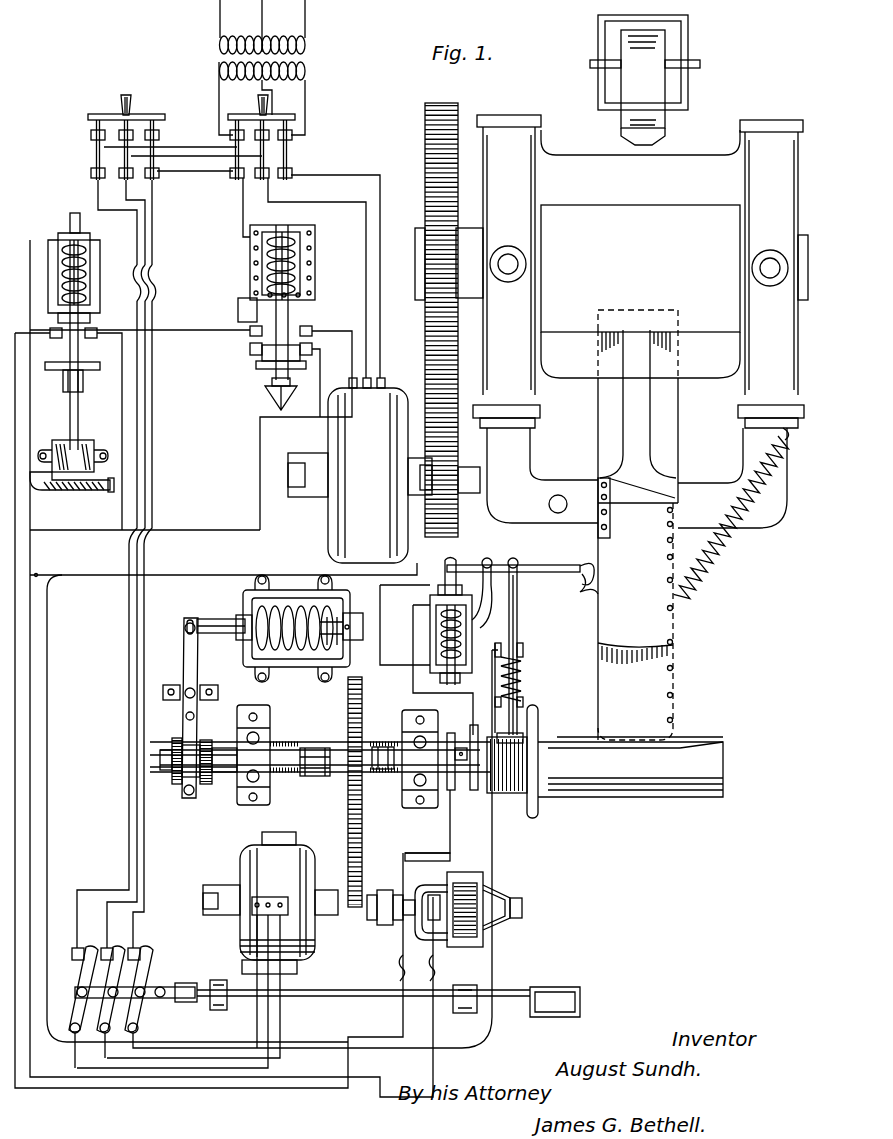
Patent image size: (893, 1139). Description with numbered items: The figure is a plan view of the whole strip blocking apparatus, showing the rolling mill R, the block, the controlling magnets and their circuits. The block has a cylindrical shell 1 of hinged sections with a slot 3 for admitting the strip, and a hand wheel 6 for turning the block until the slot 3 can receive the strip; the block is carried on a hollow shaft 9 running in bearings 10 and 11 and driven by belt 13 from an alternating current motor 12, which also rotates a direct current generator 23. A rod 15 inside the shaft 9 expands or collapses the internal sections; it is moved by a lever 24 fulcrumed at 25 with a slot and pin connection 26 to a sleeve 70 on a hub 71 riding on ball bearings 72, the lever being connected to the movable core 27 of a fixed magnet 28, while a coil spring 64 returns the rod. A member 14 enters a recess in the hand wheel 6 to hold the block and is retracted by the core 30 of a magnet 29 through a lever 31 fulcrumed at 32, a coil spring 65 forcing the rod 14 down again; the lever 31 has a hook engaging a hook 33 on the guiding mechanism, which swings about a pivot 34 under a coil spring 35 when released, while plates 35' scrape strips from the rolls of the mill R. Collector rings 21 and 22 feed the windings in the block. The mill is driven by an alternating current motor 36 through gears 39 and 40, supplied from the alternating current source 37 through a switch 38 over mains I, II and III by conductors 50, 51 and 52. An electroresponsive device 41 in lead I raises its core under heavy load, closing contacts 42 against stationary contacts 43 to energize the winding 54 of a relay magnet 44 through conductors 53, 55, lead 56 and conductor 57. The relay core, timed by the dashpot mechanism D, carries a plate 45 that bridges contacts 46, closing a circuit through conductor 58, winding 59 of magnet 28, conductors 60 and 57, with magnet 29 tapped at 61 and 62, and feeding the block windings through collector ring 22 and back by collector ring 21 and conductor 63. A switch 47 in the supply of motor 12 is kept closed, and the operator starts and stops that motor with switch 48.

The cylindrical shell 1 is at (642, 775).
The space 3 is at (690, 747).
The hand wheel 6 is at (538, 812).
The hollow shaft 9 is at (300, 748).
The bearing 10 is at (410, 718).
The bearing 11 is at (262, 738).
The alternating current motor 12 is at (207, 950).
The belt 13 is at (357, 835).
The member 14 is at (518, 644).
The rod 15 is at (392, 765).
The collector ring 21 is at (453, 792).
The collector ring 22 is at (480, 792).
The direct current generator 23 is at (490, 896).
The lever 24 is at (186, 660).
The fulcrum 25 is at (196, 700).
The slot and pin connection 26 is at (186, 788).
The movable core 27 is at (208, 620).
The direct current fixed magnet 28 is at (305, 668).
The direct current magnet 29 is at (462, 665).
The core 30 is at (447, 588).
The lever 31 is at (517, 566).
The fulcrum 32 is at (486, 560).
The hook 33 is at (578, 582).
The pivot 34 is at (556, 497).
The coil spring 35 is at (731, 517).
The plates 35' is at (658, 525).
The alternating current motor 36 is at (360, 470).
The source of alternating current supply 37 is at (245, 62).
The manually operable switch 38 is at (272, 143).
The gear 39 is at (452, 480).
The gear 40 is at (427, 197).
The alternating current electroresponsive device 41 is at (300, 240).
The contacts 42 is at (252, 349).
The stationary contacts 43 is at (263, 333).
The direct current magnet 44 is at (55, 250).
The plate 45 is at (86, 372).
The stationary contacts 46 is at (56, 340).
The switch 47 is at (122, 152).
The switch 48 is at (120, 1003).
The conductor 50 is at (243, 214).
The conductor 51 is at (368, 217).
The conductor 52 is at (375, 183).
The conductor 53 is at (17, 648).
The winding 54 is at (75, 294).
The conductor 55 is at (238, 315).
The lead 56 is at (258, 362).
The conductor 57 is at (33, 618).
The conductor 58 is at (118, 528).
The winding 59 is at (340, 616).
The conductor 60 is at (182, 578).
The tap 61 is at (310, 590).
The tap 62 is at (298, 590).
The conductor 63 is at (450, 836).
The coil spring 64 is at (297, 780).
The coil spring 65 is at (522, 682).
The sleeve 70 is at (203, 785).
The hub 71 is at (168, 762).
The ball bearings 72 is at (178, 738).
The dashpot mechanism D is at (85, 488).
The rolling mill R is at (632, 271).
The main I is at (225, 19).
The main II is at (271, 26).
The main III is at (317, 19).